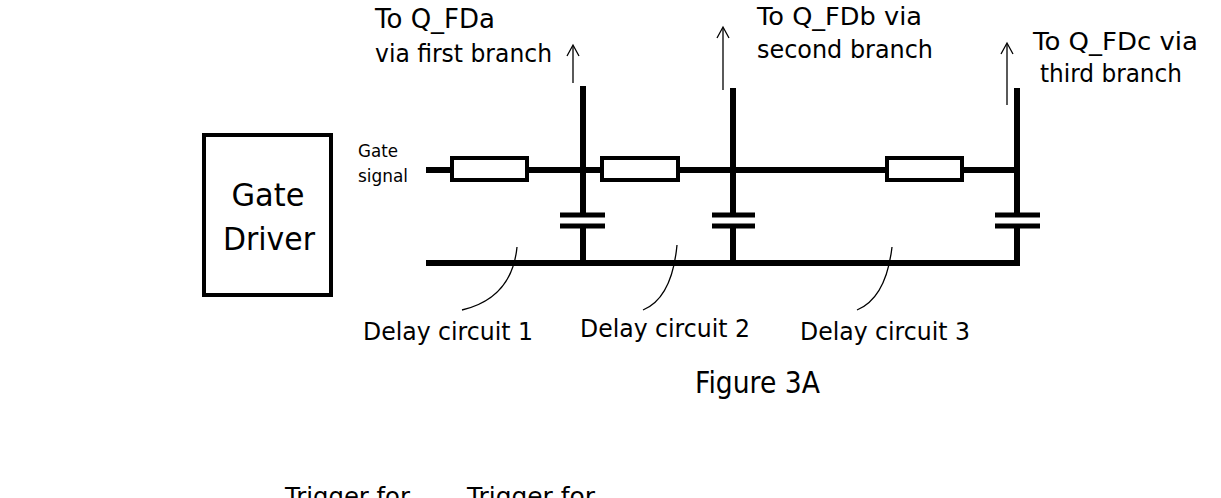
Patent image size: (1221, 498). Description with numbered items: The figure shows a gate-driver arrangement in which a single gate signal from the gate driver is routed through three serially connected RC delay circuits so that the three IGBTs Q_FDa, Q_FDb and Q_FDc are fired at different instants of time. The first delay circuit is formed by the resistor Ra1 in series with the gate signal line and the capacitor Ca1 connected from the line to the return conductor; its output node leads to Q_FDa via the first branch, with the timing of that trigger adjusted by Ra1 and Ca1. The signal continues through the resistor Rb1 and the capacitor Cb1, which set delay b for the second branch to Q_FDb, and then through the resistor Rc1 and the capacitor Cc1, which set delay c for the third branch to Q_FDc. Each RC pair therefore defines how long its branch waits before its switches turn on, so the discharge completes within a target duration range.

The resistor Ra1 is at (495, 155).
The resistor Rb1 is at (643, 155).
The resistor Rc1 is at (927, 155).
The capacitor Ca1 is at (560, 224).
The capacitor Cb1 is at (711, 224).
The capacitor Cc1 is at (987, 224).